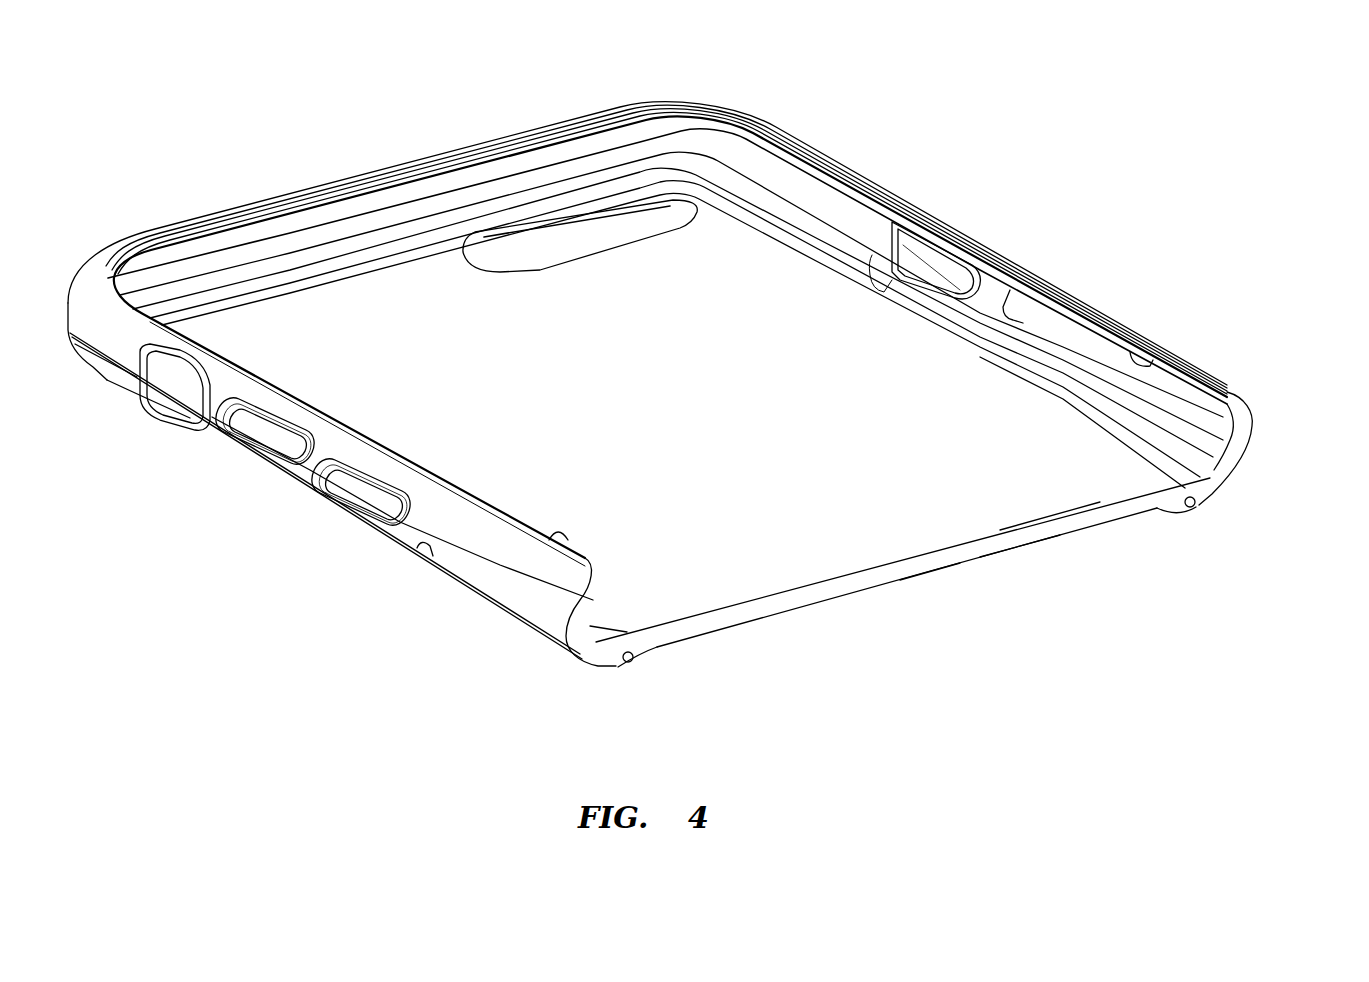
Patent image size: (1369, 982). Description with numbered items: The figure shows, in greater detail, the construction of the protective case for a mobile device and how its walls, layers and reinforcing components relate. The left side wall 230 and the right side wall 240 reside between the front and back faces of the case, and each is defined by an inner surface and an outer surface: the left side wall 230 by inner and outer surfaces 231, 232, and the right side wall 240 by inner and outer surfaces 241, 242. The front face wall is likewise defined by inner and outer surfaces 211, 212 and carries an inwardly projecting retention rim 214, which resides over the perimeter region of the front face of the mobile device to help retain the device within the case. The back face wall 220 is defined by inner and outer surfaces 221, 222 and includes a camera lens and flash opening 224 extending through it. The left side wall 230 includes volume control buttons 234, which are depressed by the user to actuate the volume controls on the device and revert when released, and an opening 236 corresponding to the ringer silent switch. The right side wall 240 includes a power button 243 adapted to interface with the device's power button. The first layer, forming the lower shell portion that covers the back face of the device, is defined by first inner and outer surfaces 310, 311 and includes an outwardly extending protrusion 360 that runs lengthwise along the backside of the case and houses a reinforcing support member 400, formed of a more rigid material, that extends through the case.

The camera lens and flash opening 224 is at (557, 240).
The power button 243 is at (945, 258).
The inner surface of left side wall 231 is at (1008, 320).
The inner surface of front face wall 211 is at (1133, 357).
The outer surface of front face wall 212 is at (1195, 362).
The retention rim 214 is at (1236, 396).
The outer surface of left side wall 232 is at (1255, 432).
The right side wall 240 is at (1237, 445).
The reinforcing support member 400 is at (1190, 508).
The outwardly extending protrusion 360 is at (1205, 497).
The inner surface of back face wall 221 is at (1053, 513).
The outer surface of back face wall 222 is at (1017, 549).
The back face wall 220 is at (937, 569).
The first inner surface of first layer 310 is at (797, 560).
The first outer surface of first layer 311 is at (710, 632).
The inner surface of right side wall 241 is at (603, 600).
The left side wall 230 is at (587, 645).
The ringer silent switch opening 236 is at (190, 387).
The volume control buttons 234 is at (347, 500).
The outer surface of right side wall 242 is at (460, 530).